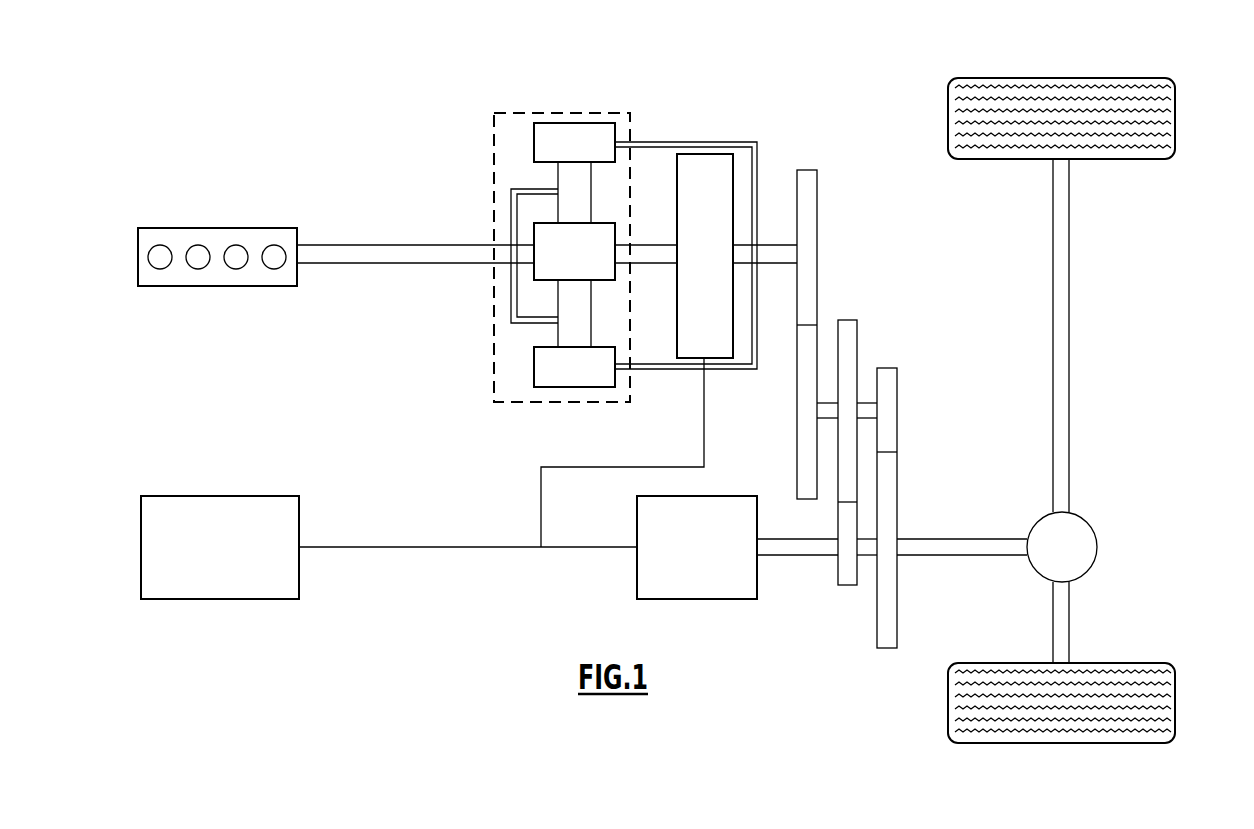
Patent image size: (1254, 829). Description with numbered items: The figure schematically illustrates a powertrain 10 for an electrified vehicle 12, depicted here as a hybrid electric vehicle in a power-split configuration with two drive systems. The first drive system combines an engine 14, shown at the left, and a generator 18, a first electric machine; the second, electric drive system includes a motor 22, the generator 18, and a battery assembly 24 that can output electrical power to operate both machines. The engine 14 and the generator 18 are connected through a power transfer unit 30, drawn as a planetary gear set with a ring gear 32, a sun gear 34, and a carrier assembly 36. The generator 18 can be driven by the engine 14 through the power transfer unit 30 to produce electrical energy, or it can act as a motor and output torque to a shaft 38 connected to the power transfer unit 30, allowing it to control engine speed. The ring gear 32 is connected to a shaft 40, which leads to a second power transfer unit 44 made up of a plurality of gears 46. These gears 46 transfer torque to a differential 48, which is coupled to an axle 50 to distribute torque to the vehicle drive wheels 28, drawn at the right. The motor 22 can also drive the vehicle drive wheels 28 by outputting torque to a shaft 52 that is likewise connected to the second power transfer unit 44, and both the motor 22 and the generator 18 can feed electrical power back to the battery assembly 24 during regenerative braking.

The powertrain 10 is at (350, 138).
The electrified vehicle 12 is at (729, 71).
The engine 14 is at (153, 228).
The generator 18 is at (685, 154).
The motor 22 is at (757, 584).
The battery assembly 24 is at (157, 496).
The vehicle drive wheels 28 is at (1175, 700).
The power transfer unit 30 is at (494, 366).
The ring gear 32 is at (534, 140).
The sun gear 34 is at (534, 233).
The carrier assembly 36 is at (511, 311).
The shaft 38 is at (648, 243).
The shaft 40 is at (775, 243).
The second power transfer unit 44 is at (884, 284).
The gears 46 is at (817, 291).
The differential 48 is at (1093, 565).
The axle 50 is at (1069, 327).
The shaft 52 is at (807, 556).